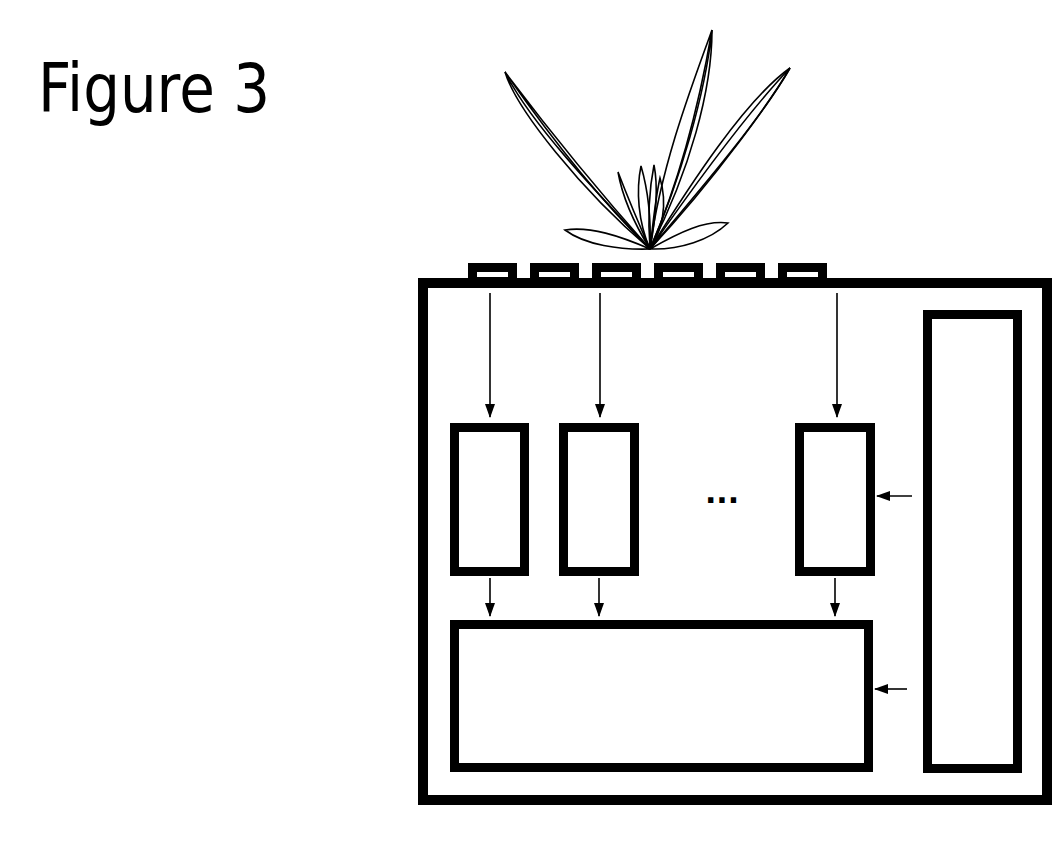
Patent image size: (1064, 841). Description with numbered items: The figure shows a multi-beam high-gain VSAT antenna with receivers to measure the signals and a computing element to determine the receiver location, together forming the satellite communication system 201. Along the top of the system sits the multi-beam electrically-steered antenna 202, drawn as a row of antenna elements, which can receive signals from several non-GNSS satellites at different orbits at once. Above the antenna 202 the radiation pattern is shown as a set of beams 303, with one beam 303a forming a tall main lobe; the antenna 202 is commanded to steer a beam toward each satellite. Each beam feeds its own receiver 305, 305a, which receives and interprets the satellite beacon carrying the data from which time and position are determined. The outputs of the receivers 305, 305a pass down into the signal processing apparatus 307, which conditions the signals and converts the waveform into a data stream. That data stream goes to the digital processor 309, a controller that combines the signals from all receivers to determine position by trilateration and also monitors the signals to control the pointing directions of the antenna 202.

The satellite communication system 201 is at (913, 343).
The antenna 202 is at (617, 262).
The beam 303 is at (672, 158).
The beam 303a is at (721, 138).
The receiver 305 is at (490, 500).
The receiver 305a is at (599, 500).
The signal processing apparatus 307 is at (662, 696).
The digital processor 309 is at (973, 542).